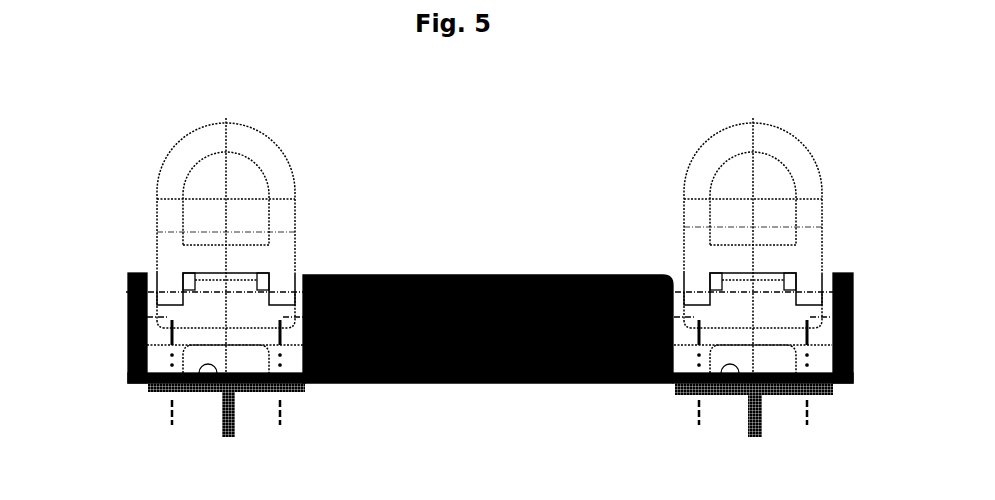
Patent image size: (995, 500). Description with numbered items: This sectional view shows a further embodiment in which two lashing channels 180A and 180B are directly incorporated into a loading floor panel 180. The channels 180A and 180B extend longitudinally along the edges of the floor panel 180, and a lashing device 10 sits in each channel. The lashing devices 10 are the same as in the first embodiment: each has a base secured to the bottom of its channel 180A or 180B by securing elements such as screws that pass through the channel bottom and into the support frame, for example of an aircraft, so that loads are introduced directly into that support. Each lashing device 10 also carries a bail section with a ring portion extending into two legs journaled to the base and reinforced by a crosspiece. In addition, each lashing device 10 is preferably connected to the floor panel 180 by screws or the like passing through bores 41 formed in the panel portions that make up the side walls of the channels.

The lashing device 10 is at (466, 264).
The floor panel 180 is at (427, 275).
The lashing channel 180A is at (180, 345).
The lashing channel 180B is at (763, 368).
The bore 41 is at (111, 328).